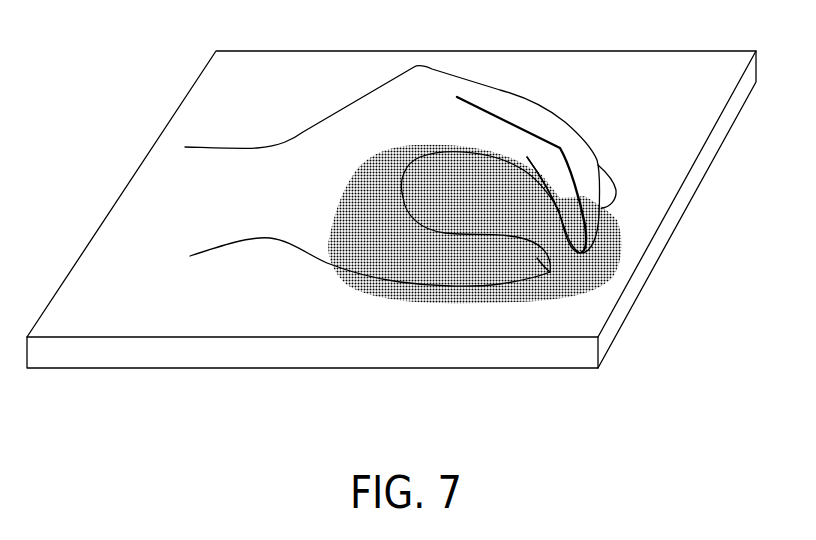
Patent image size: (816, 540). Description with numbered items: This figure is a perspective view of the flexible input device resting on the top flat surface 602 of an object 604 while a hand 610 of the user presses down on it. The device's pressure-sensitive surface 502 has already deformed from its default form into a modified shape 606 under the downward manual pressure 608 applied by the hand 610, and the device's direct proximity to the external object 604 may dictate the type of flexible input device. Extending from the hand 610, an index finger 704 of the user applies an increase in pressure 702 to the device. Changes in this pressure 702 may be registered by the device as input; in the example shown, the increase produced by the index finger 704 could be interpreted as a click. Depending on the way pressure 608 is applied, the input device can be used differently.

The pressure-sensitive surface 502 is at (478, 208).
The top flat surface 602 is at (590, 63).
The object 604 is at (302, 368).
The modified shape 606 is at (616, 211).
The downward manual pressure 608 is at (553, 263).
The hand 610 is at (418, 120).
The pressure increase 702 is at (527, 157).
The index finger 704 is at (560, 150).